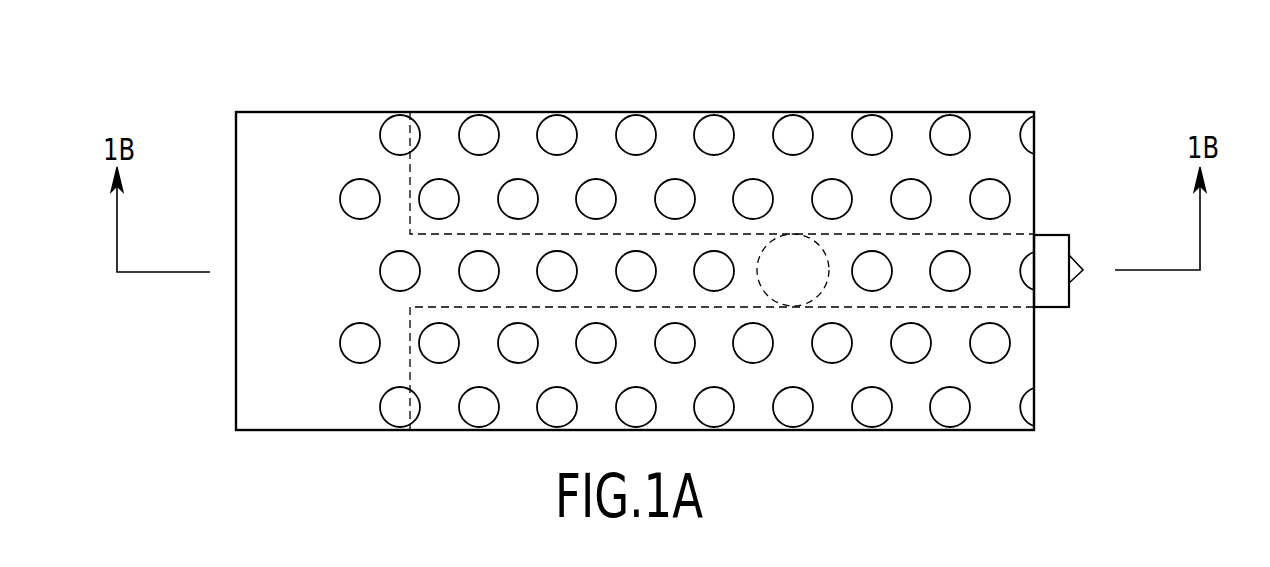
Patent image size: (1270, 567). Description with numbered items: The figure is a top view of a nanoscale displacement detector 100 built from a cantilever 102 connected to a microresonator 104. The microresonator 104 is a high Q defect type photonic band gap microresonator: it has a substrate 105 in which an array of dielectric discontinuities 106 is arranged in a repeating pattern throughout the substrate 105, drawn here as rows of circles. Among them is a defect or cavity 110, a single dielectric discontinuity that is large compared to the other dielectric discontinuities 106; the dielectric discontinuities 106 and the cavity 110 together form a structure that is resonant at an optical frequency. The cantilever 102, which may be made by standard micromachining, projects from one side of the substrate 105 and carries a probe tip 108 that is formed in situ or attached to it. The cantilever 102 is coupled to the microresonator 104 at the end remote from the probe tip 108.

The nanoscale displacement detector 100 is at (273, 64).
The cantilever 102 is at (1055, 234).
The microresonator 104 is at (920, 112).
The substrate 105 is at (243, 398).
The dielectric discontinuities 106 is at (388, 132).
The probe tip 108 is at (1085, 272).
The cavity 110 is at (762, 252).